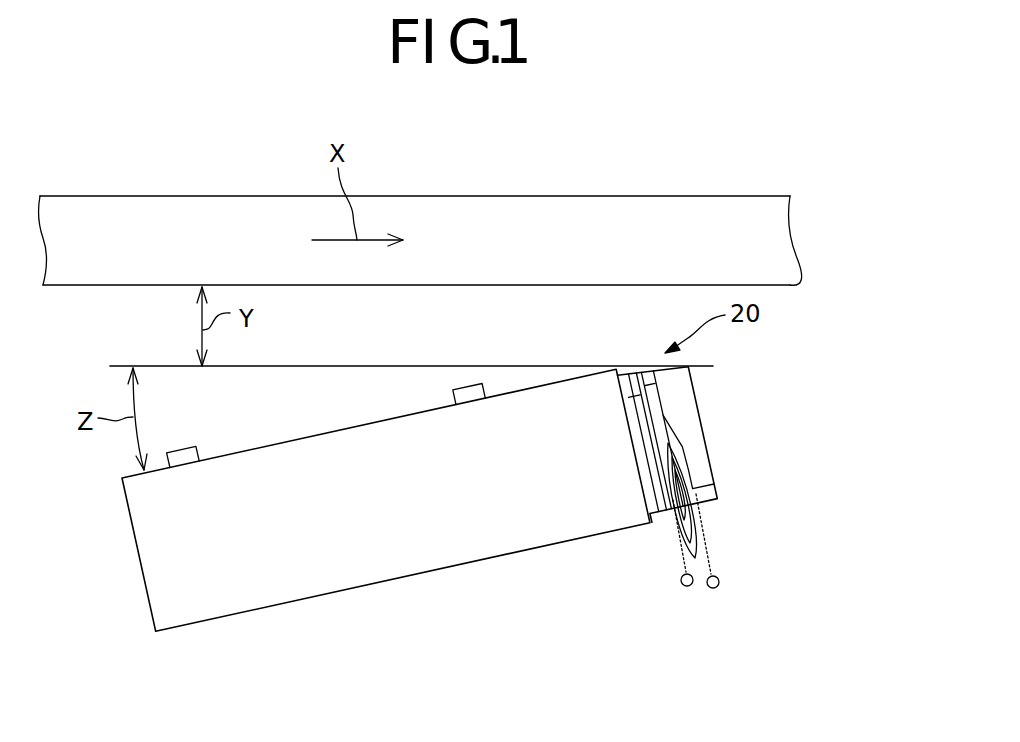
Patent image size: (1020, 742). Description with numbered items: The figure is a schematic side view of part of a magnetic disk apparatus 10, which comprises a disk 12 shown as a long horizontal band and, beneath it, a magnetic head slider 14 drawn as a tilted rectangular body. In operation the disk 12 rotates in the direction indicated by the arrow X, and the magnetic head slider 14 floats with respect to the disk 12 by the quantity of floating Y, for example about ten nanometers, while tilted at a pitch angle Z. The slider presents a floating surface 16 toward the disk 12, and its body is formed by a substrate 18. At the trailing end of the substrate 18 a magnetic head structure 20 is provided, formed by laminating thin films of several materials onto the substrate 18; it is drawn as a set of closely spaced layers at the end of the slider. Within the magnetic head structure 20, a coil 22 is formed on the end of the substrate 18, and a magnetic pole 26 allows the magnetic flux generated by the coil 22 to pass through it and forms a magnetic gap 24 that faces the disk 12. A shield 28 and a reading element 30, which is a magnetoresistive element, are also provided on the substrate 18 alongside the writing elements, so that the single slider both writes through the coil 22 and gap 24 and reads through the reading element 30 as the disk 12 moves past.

The magnetic disk apparatus 10 is at (812, 316).
The disk 12 is at (565, 227).
The magnetic head slider 14 is at (465, 523).
The floating surface 16 is at (302, 438).
The substrate 18 is at (508, 540).
The magnetic head structure 20 is at (697, 479).
The coil 22 is at (683, 465).
The magnetic gap 24 is at (655, 383).
The magnetic pole 26 is at (687, 425).
The shield 28 is at (642, 483).
The reading element (MR element) 30 is at (641, 395).